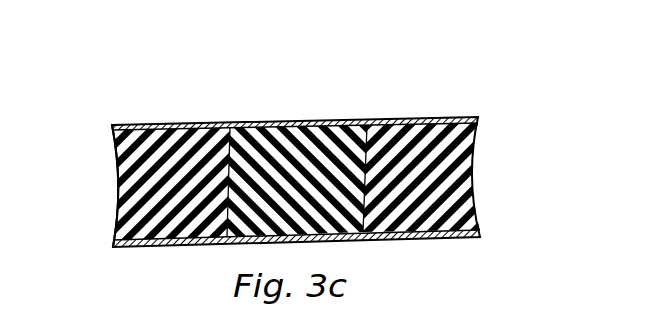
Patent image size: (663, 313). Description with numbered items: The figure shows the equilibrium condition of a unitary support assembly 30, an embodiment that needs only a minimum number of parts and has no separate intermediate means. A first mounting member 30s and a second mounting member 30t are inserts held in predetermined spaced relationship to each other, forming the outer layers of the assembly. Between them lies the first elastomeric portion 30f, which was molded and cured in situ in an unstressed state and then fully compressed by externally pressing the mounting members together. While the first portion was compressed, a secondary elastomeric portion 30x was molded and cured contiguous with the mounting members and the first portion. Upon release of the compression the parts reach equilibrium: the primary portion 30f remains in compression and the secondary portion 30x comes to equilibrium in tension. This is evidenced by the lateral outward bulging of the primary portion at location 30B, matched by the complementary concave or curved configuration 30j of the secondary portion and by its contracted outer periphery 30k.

The unitary support assembly 30 is at (112, 152).
The second mounting member 30t is at (433, 118).
The first mounting member 30s is at (416, 232).
The secondary elastomeric portion 30x is at (472, 182).
The first elastomeric portion 30f is at (338, 145).
The concave curved configuration 30j is at (220, 174).
The bulging location 30B is at (230, 178).
The contracted outer periphery 30k is at (117, 187).